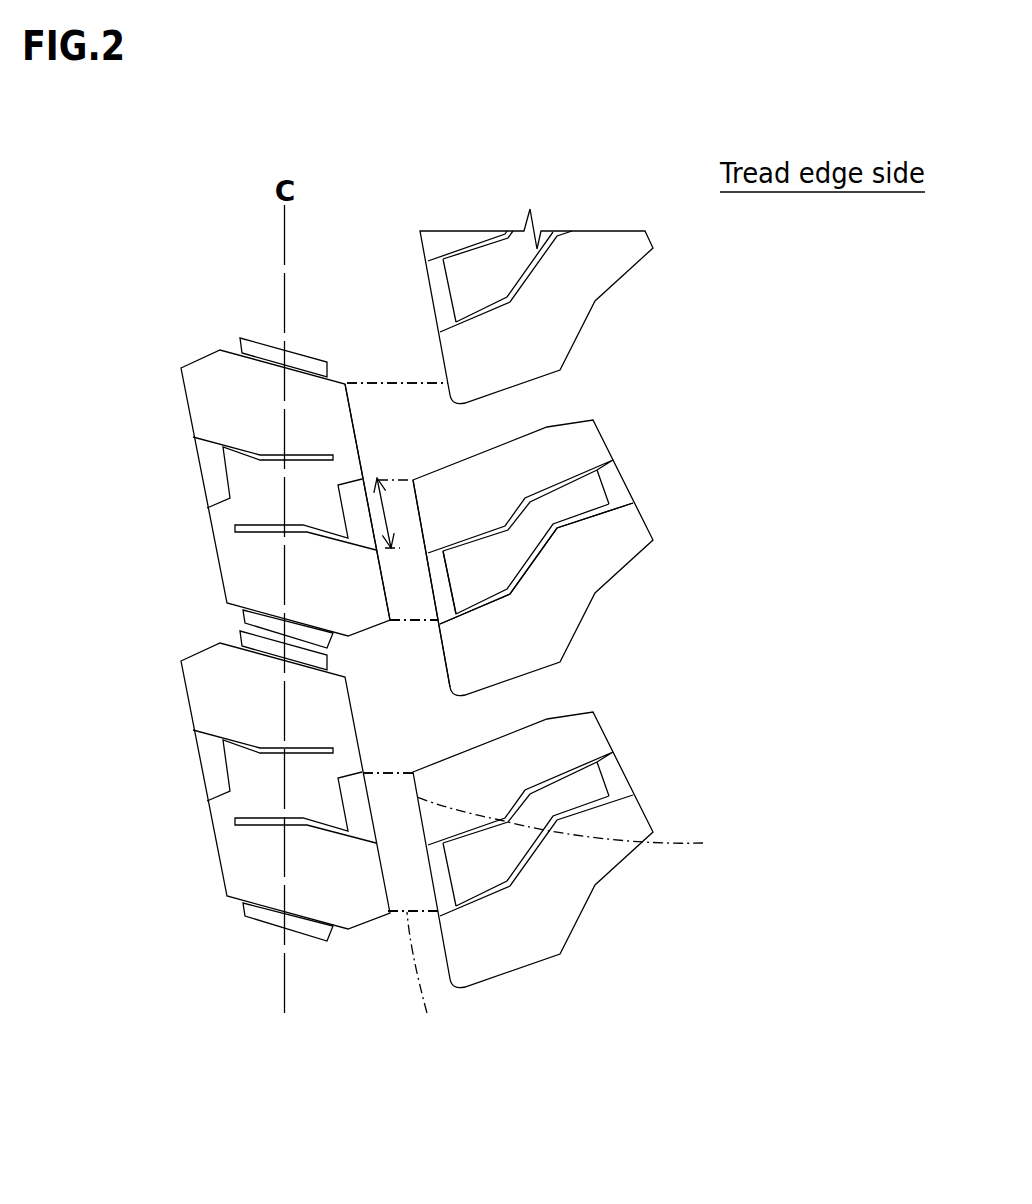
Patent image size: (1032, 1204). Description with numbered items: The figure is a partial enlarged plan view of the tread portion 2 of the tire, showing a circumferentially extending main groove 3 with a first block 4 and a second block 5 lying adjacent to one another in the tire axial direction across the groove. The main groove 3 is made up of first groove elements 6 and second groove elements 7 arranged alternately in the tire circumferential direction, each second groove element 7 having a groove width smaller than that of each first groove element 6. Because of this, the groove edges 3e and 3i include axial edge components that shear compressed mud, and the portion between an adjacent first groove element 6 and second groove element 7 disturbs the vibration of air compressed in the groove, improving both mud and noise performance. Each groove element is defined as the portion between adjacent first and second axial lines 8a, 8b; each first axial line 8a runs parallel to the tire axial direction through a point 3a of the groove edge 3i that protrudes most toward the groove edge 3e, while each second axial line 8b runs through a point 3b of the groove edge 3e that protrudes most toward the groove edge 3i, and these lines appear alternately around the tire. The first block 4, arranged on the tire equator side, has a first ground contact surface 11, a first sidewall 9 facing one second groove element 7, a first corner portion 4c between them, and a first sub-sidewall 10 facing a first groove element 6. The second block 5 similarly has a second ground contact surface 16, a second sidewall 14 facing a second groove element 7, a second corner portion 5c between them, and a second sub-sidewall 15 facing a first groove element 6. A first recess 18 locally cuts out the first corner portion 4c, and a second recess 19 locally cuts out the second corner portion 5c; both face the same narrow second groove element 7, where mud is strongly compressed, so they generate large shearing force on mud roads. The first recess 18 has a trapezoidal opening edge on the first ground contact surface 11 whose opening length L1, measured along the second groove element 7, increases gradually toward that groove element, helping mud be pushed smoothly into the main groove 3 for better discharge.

The tread portion 2 is at (748, 272).
The main groove 3 is at (378, 293).
The groove edge 3i is at (350, 403).
The groove edge 3e is at (428, 540).
The point 3a is at (389, 912).
The point 3b is at (413, 771).
The first block 4 is at (262, 592).
The first ground contact surface 11 is at (218, 387).
The first corner portion 4c is at (286, 640).
The second block 5 is at (570, 628).
The second ground contact surface 16 is at (565, 445).
The second corner portion 5c is at (442, 572).
The first groove element 6 is at (390, 417).
The second groove element 7 is at (407, 587).
The first axial line 8a is at (425, 981).
The second axial line 8b is at (579, 827).
The first sidewall 9 is at (230, 639).
The first sub-sidewall 10 is at (355, 447).
The second sidewall 14 is at (605, 573).
The second sub-sidewall 15 is at (441, 643).
The first recess 18 is at (357, 520).
The second recess 19 is at (577, 525).
The opening length L1 is at (340, 488).